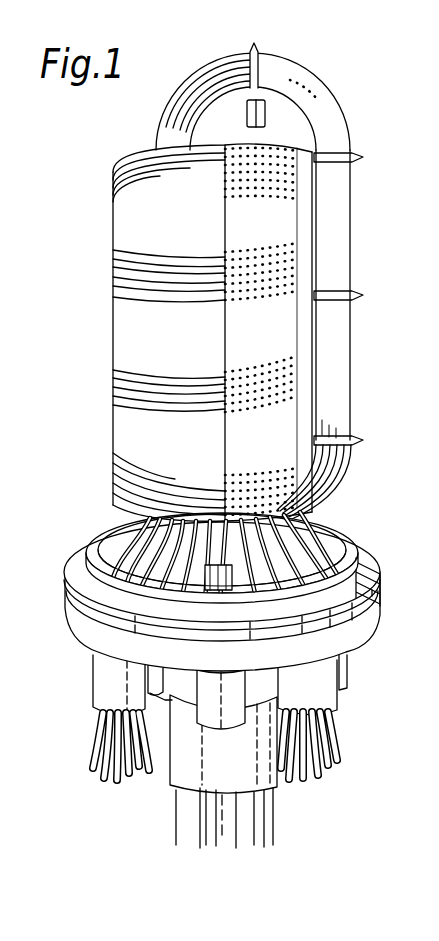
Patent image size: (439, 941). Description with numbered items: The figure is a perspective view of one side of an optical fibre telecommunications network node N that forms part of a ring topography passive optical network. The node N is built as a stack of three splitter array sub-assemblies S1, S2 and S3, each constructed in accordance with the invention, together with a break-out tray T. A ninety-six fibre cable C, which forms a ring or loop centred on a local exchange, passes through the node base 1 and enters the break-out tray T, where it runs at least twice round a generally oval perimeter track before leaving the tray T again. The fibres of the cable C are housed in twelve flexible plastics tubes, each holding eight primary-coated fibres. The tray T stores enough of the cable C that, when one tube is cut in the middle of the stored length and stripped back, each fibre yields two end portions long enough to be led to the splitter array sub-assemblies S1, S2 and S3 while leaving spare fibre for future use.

The node base 1 is at (380, 575).
The break-out tray T is at (272, 112).
The node N is at (357, 119).
The fibre cable C is at (334, 230).
The splitter array sub-assembly S1 is at (112, 422).
The splitter array sub-assembly S2 is at (112, 327).
The splitter array sub-assembly S3 is at (112, 230).